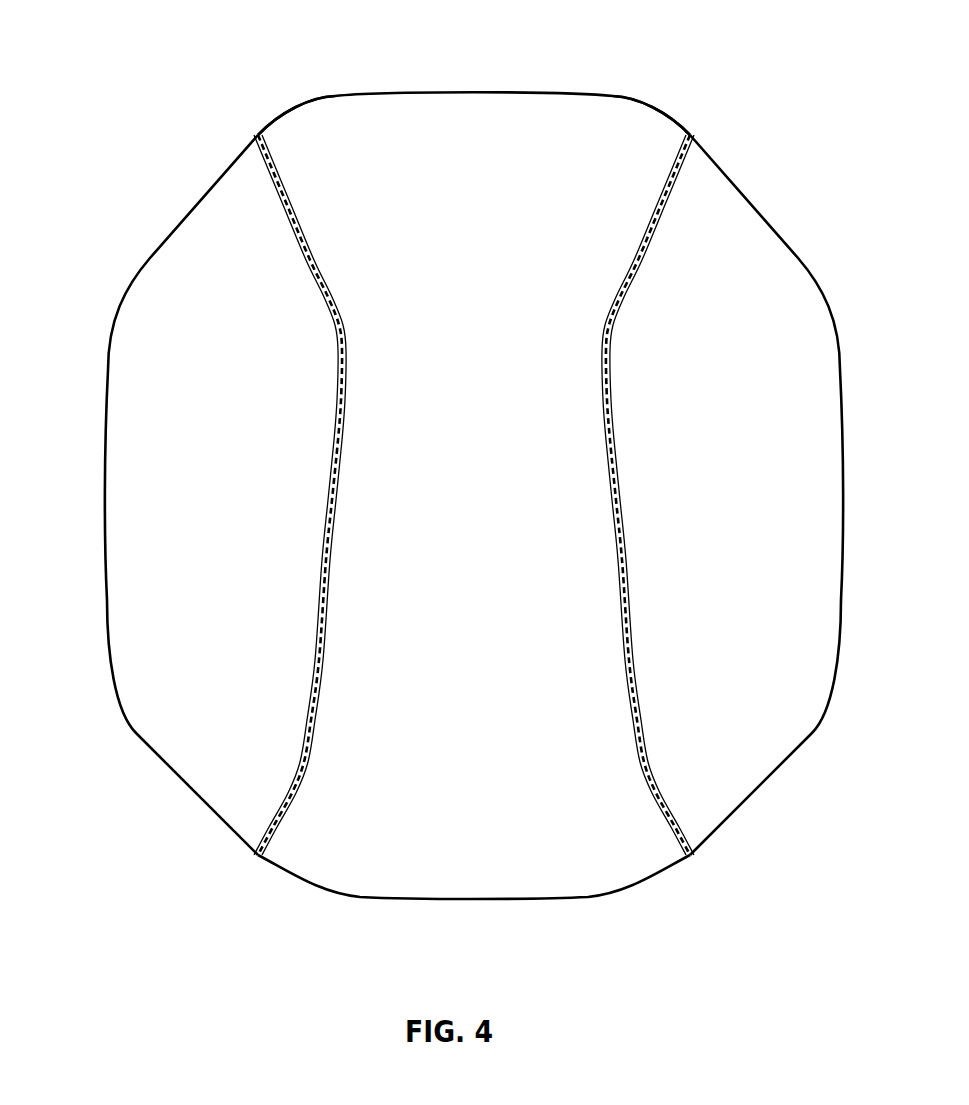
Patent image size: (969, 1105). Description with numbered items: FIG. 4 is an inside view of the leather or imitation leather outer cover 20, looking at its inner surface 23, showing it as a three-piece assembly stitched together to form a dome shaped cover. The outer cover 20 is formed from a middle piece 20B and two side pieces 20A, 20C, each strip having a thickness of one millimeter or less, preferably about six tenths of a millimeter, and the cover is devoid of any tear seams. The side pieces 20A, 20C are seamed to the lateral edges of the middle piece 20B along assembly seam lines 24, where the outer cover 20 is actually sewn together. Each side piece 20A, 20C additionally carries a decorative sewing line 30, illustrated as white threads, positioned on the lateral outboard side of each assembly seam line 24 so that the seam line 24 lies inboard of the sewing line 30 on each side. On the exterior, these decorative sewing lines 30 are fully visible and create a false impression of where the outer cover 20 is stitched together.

The outer cover 20 is at (448, 492).
The side piece 20A is at (761, 767).
The middle piece 20B is at (433, 883).
The side piece 20C is at (150, 495).
The inner surface 23 is at (140, 627).
The assembly seam line 24 is at (285, 173).
The decorative sewing line 30 is at (268, 165).